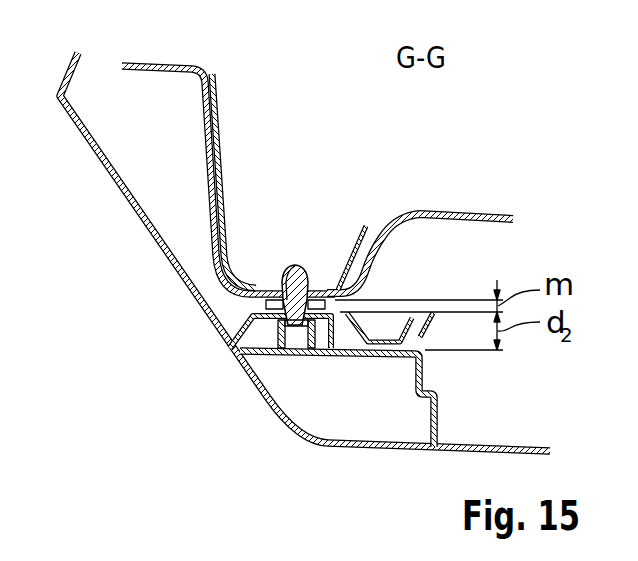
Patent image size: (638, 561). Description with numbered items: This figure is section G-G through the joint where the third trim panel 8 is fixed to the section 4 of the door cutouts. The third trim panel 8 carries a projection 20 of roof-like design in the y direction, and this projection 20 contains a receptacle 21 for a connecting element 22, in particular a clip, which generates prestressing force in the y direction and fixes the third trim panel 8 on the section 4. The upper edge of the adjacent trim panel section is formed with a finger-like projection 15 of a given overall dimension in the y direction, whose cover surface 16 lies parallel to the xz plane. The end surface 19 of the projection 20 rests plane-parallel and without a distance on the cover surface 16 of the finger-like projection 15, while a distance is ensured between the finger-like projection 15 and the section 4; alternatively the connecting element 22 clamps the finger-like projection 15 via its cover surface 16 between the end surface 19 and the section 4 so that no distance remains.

The section 4 is at (223, 137).
The third trim panel 8 is at (99, 158).
The finger-like projection 15 is at (400, 320).
The cover surface 16 is at (496, 349).
The end surface 19 is at (412, 327).
The projection 20 is at (358, 407).
The receptacle 21 is at (293, 330).
The connecting element 22 is at (293, 262).